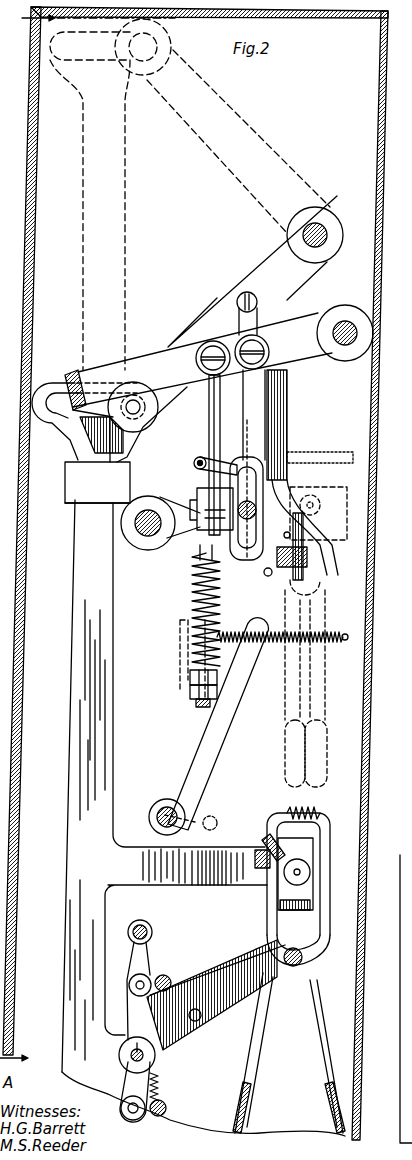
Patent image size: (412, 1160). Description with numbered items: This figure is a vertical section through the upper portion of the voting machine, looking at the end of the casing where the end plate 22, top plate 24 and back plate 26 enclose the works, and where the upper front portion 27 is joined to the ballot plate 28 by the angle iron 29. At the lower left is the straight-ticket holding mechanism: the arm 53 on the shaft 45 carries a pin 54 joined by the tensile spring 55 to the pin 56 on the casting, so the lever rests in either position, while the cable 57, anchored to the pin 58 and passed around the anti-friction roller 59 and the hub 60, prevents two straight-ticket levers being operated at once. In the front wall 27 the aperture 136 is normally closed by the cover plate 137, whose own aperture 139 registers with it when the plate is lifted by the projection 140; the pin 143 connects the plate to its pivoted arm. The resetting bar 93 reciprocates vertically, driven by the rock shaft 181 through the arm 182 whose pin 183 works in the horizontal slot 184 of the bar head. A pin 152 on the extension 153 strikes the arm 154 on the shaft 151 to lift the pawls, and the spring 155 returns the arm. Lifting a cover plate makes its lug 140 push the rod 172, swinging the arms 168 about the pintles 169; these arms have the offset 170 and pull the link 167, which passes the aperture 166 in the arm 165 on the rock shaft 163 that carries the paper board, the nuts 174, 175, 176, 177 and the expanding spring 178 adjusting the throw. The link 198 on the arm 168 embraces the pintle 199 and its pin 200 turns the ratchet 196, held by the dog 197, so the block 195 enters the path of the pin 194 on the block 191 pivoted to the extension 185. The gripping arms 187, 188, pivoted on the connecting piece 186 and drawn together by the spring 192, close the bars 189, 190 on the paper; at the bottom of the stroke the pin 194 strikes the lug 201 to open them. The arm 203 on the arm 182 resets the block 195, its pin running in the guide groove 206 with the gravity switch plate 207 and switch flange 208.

The end plate 22 is at (190, 194).
The top plate 24 is at (347, 20).
The back plate 26 is at (370, 634).
The upper portion of front plate 27 is at (405, 181).
The intermediate portion of front plate 28 is at (411, 936).
The angle iron 29 is at (411, 851).
The shaft 45 is at (128, 1063).
The arm 53 is at (152, 1007).
The pin 54 is at (144, 980).
The helically-coiled tensile spring 55 is at (158, 1090).
The pin 56 is at (167, 978).
The cable 57 is at (131, 967).
The pin 58 is at (150, 927).
The anti-friction roller 59 is at (130, 985).
The hub 60 is at (132, 1046).
The resetting bar 93 is at (163, 786).
The aperture 136 is at (411, 314).
The cover plate 137 is at (400, 327).
The aperture 139 is at (411, 722).
The projection 140 is at (411, 492).
The pin 143 is at (411, 832).
The shaft 151 is at (163, 806).
The pin 152 is at (215, 820).
The extension 153 is at (225, 1005).
The arm 154 is at (228, 739).
The spring 155 is at (304, 648).
The rock shaft 163 is at (140, 528).
The arm 165 is at (187, 553).
The aperture 166 is at (187, 577).
The link 167 is at (194, 463).
The arm 168 is at (280, 340).
The pintle 169 is at (343, 346).
The offset 170 is at (77, 373).
The rod 172 is at (411, 425).
The abutment nut 174 is at (97, 494).
The set nut 175 is at (97, 482).
The abutment nut 176 is at (190, 677).
The set nut 177 is at (191, 690).
The helically-coiled expanding spring 178 is at (190, 646).
The rock shaft 181 is at (317, 230).
The arm 182 is at (217, 298).
The pin 183 is at (130, 422).
The horizontal slot 184 is at (53, 413).
The extension 185 is at (186, 942).
The connecting piece 186 is at (298, 889).
The arm 187 is at (262, 1040).
The arm 188 is at (320, 1056).
The bar 189 is at (261, 1108).
The bar 190 is at (333, 1116).
The block 191 is at (312, 695).
The helically-coiled contractile spring 192 is at (330, 460).
The pin 194 is at (262, 868).
The block 195 is at (175, 532).
The ratchet 196 is at (222, 505).
The dog 197 is at (214, 470).
The link 198 is at (253, 410).
The pintle 199 is at (254, 500).
The pin 200 is at (233, 573).
The lug 201 is at (266, 840).
The arm 203 is at (258, 306).
The guide groove 206 is at (320, 580).
The gravity switch plate 207 is at (298, 557).
The switch flange 208 is at (290, 543).